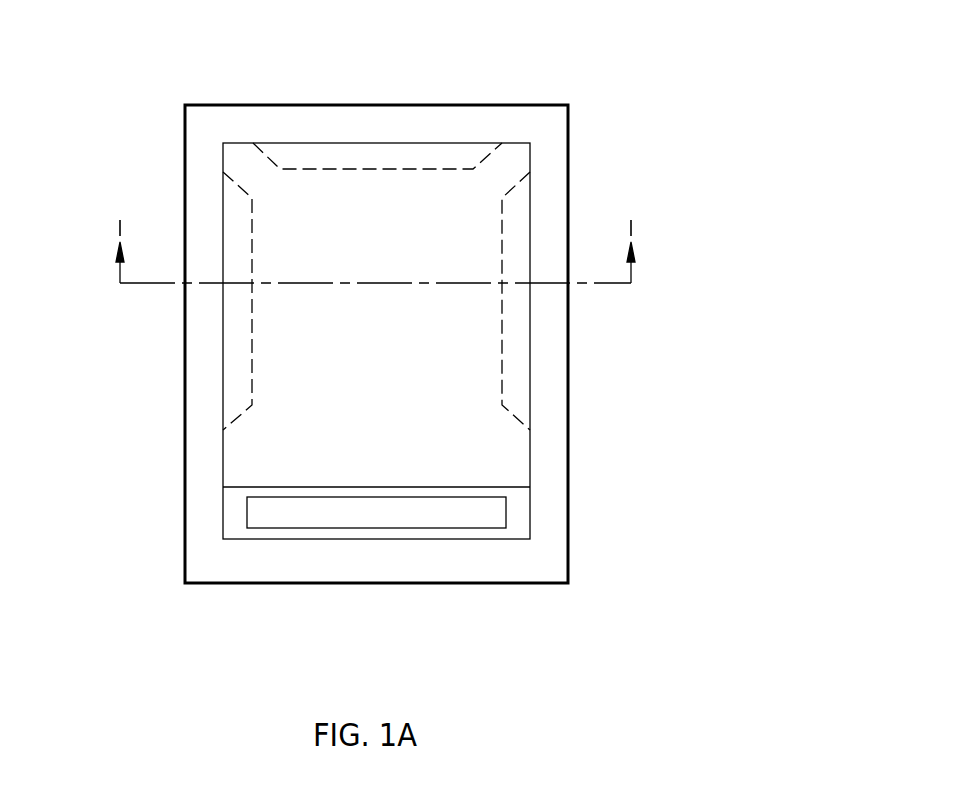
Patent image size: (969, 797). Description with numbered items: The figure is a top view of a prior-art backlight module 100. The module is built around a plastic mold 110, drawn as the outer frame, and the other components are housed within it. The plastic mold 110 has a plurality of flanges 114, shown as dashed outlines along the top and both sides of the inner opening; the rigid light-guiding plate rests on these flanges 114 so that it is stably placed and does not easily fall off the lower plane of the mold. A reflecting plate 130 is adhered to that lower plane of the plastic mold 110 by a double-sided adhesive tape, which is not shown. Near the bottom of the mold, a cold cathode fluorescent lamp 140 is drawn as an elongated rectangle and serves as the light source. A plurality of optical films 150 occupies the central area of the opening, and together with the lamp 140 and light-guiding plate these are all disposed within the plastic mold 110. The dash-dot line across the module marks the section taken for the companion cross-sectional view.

The backlight module 100 is at (365, 334).
The plastic mold 110 is at (530, 122).
The flanges 114 is at (368, 155).
The reflecting plate 130 is at (292, 492).
The cold cathode fluorescent lamp 140 is at (262, 513).
The optical films 150 is at (393, 445).